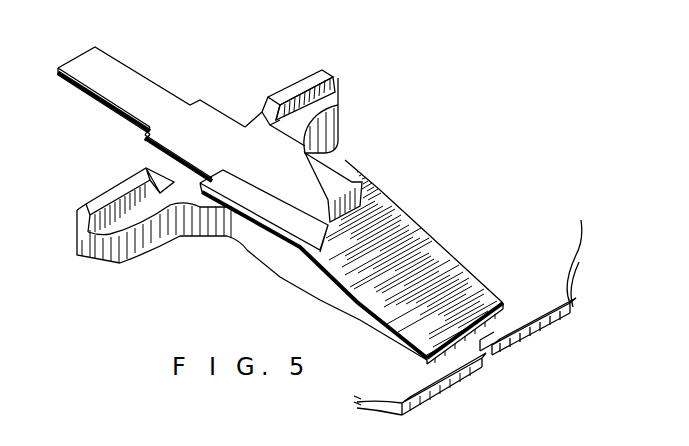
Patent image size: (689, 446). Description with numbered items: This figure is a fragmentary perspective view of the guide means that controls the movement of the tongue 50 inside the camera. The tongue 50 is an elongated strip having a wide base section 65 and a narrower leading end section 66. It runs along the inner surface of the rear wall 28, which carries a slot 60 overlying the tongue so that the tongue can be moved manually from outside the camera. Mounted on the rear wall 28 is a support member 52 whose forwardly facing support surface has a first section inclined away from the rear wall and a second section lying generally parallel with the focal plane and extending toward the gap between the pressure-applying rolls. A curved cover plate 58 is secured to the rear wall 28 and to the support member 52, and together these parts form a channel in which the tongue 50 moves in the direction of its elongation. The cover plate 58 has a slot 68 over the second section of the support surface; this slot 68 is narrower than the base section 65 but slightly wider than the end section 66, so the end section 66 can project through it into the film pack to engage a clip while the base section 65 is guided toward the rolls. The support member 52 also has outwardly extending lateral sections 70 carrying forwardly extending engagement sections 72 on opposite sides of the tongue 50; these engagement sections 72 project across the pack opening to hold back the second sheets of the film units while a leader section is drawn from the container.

The rear wall 28 is at (385, 374).
The tongue 50 is at (212, 127).
The support member 52 is at (268, 248).
The curved cover plate 58 is at (417, 240).
The slot 60 is at (494, 350).
The base section 65 is at (230, 160).
The leading end section 66 is at (98, 68).
The slot 68 is at (292, 188).
The lateral sections 70 is at (113, 243).
The engagement sections 72 is at (117, 193).